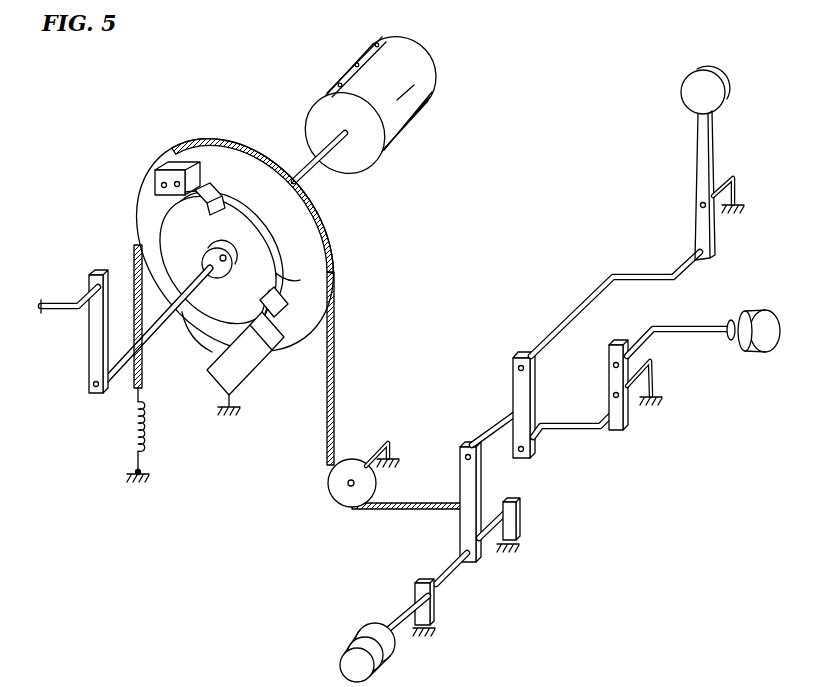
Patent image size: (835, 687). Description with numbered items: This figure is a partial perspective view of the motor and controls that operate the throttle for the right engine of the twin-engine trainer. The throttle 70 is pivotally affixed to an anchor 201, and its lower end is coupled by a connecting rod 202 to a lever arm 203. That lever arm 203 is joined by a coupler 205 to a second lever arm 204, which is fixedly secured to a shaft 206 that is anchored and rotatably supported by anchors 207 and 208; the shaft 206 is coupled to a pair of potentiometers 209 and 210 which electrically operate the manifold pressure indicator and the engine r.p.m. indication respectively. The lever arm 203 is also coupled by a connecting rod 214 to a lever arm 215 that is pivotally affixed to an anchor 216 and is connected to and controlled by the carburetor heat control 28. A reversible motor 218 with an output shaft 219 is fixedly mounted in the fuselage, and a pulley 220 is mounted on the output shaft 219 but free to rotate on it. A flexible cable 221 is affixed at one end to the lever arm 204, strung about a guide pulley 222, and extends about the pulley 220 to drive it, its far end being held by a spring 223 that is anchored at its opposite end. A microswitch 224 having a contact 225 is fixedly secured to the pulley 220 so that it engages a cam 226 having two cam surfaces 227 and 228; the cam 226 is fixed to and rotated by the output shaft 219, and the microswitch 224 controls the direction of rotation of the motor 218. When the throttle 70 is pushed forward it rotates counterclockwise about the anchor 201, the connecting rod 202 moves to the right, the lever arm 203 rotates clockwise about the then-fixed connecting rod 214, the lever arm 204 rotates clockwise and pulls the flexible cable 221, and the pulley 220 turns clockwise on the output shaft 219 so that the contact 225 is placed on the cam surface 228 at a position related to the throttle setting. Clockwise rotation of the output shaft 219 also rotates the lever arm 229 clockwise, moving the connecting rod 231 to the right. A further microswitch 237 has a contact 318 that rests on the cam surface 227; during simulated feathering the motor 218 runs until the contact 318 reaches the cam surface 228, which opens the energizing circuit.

The throttle 70 is at (695, 150).
The carburetor heat control 28 is at (725, 322).
The anchor 201 is at (740, 182).
The connecting rod 202 is at (650, 276).
The lever arm 203 is at (531, 378).
The lever arm 204 is at (478, 462).
The coupler 205 is at (514, 418).
The shaft 206 is at (468, 565).
The anchor 207 is at (520, 520).
The anchor 208 is at (418, 582).
The potentiometer 209 is at (352, 652).
The potentiometer 210 is at (362, 630).
The connecting rod 214 is at (585, 432).
The lever arm 215 is at (628, 420).
The anchor 216 is at (660, 378).
The reversible motor 218 is at (347, 74).
The output shaft 219 is at (322, 168).
The pulley 220 is at (300, 236).
The flexible cable 221 is at (338, 376).
The guide pulley 222 is at (337, 488).
The spring 223 is at (132, 422).
The microswitch 224 is at (184, 160).
The contact 225 is at (222, 190).
The cam 226 is at (218, 335).
The cam surface 227 is at (140, 250).
The cam surface 228 is at (300, 278).
The lever arm 229 is at (92, 340).
The connecting rod 231 is at (58, 302).
The microswitch 237 is at (249, 371).
The contact 318 is at (268, 348).